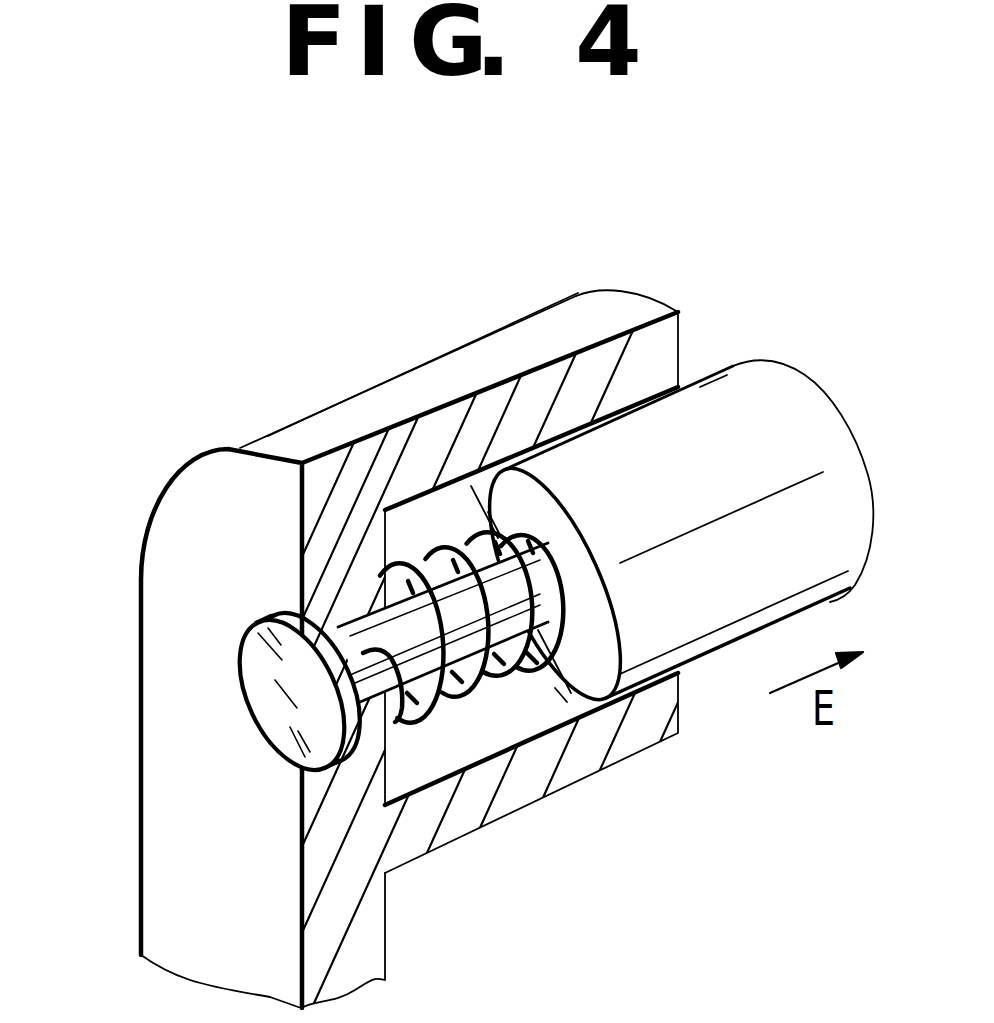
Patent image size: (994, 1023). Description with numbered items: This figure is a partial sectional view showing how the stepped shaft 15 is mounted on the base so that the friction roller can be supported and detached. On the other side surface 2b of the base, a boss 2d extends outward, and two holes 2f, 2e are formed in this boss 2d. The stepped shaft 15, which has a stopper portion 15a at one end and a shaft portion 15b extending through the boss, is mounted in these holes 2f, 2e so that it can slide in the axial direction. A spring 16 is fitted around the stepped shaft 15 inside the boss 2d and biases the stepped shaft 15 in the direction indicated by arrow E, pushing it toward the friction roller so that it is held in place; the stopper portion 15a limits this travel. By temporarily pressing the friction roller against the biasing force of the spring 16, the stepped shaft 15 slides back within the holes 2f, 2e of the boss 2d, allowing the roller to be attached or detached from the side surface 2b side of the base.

The side surface 2b is at (217, 883).
The boss 2d is at (531, 402).
The hole 2e is at (347, 560).
The hole 2f is at (419, 524).
The stepped shaft 15 is at (786, 434).
The stopper portion 15a is at (266, 697).
The shaft portion 15b is at (365, 695).
The spring 16 is at (462, 686).